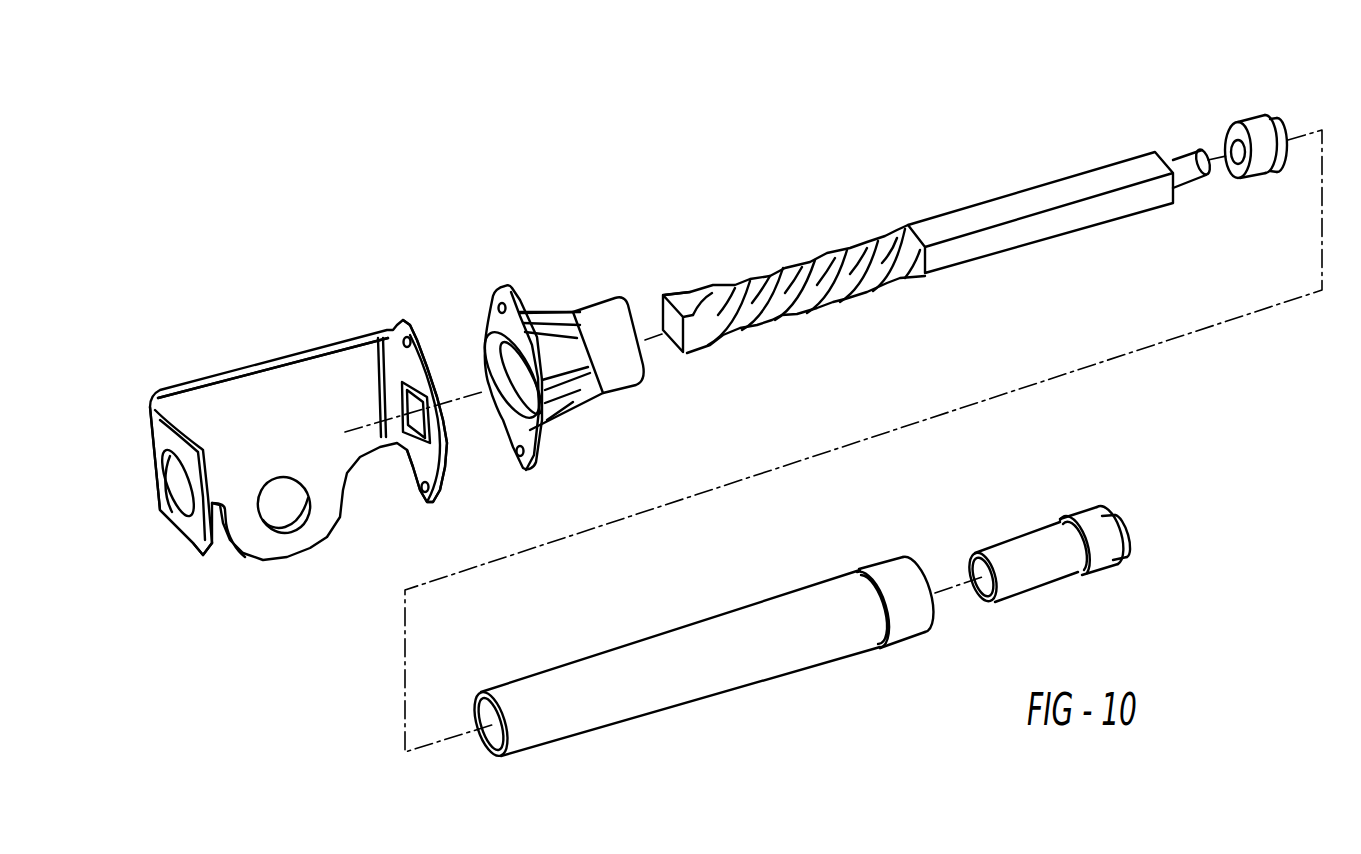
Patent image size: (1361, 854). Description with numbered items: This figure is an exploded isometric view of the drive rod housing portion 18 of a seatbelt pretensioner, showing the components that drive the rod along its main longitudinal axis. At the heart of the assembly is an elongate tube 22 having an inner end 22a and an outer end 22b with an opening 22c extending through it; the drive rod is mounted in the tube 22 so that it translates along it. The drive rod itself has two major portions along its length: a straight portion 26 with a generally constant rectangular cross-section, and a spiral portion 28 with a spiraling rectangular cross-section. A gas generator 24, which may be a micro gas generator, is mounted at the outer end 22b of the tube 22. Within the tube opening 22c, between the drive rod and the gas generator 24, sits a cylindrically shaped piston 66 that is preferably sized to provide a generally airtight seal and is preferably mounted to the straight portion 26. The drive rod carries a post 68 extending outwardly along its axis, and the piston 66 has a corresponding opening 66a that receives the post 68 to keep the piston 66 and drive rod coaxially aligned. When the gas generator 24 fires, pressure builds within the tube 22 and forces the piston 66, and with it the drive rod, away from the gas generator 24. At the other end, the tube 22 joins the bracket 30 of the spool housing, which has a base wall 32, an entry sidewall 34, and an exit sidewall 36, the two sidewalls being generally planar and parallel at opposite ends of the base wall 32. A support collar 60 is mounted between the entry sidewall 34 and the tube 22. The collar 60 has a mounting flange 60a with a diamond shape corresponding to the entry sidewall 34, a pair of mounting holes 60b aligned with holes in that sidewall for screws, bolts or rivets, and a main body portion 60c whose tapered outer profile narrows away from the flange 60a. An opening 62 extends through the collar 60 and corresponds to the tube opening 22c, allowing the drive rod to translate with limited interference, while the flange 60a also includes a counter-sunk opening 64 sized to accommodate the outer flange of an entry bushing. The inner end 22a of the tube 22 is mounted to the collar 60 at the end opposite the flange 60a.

The drive rod housing portion 18 is at (753, 158).
The elongate tube 22 is at (680, 675).
The inner end 22a is at (520, 753).
The outer end 22b is at (907, 635).
The opening 22c is at (493, 742).
The gas generator 24 is at (1025, 547).
The straight portion 26 is at (1032, 197).
The spiral portion 28 is at (805, 262).
The bracket 30 is at (240, 365).
The base wall 32 is at (296, 382).
The entry sidewall 34 is at (443, 487).
The exit sidewall 36 is at (192, 530).
The support collar 60 is at (550, 264).
The mounting flange 60a is at (488, 312).
The mounting holes 60b is at (497, 287).
The main body portion 60c is at (543, 313).
The opening 62 is at (630, 307).
The counter-sunk opening 64 is at (513, 398).
The piston 66 is at (1263, 135).
The opening 66a is at (1232, 147).
The post 68 is at (1193, 175).